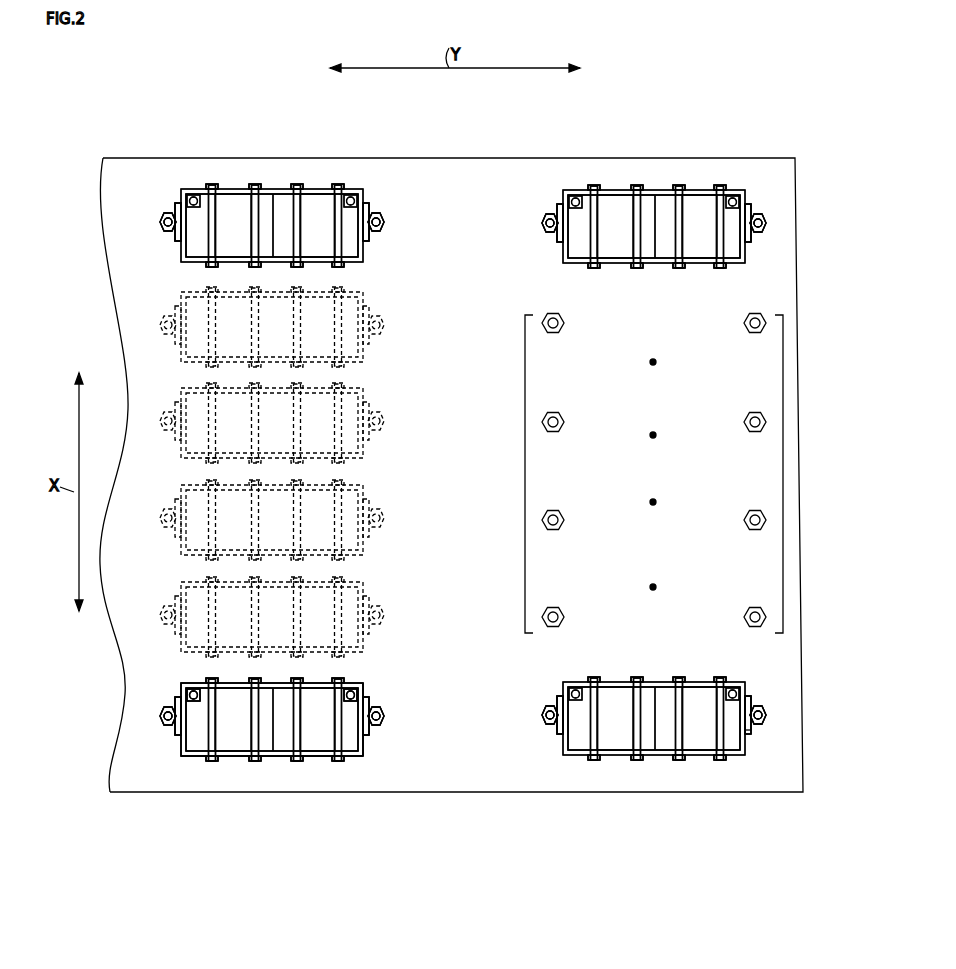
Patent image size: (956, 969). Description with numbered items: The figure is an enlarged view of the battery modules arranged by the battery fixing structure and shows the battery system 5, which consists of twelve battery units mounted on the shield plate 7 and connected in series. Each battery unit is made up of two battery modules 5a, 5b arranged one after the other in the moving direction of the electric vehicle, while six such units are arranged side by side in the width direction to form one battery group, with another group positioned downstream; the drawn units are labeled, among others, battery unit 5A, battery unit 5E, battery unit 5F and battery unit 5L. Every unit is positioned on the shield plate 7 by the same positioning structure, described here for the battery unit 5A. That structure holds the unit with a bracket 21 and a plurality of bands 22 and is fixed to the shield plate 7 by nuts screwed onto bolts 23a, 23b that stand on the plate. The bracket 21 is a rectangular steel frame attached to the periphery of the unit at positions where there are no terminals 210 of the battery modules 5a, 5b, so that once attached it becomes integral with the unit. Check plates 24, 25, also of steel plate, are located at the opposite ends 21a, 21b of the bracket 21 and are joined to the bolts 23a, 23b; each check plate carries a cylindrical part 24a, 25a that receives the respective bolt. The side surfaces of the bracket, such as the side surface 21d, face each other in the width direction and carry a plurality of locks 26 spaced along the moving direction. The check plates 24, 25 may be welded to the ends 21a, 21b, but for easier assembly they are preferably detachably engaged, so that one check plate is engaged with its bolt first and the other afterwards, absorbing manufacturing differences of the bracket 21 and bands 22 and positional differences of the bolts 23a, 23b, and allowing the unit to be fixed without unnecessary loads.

The battery system 5 is at (483, 820).
The battery unit 5A is at (297, 811).
The battery unit 5E is at (308, 134).
The battery unit 5F is at (688, 134).
The battery unit 5L is at (676, 811).
The battery module 5a is at (238, 200).
The battery module 5b is at (320, 200).
The shield plate 7 is at (448, 188).
The bracket 21 is at (192, 190).
The end of the bracket 21a is at (273, 681).
The end of the bracket 21b is at (365, 746).
The side surface of the bracket 21d is at (224, 758).
The terminals 210 is at (186, 688).
The bands 22 is at (341, 190).
The bolt 23a is at (522, 462).
The bolt 23b is at (786, 462).
The check plate 24 is at (177, 210).
The cylindrical part 24a is at (160, 223).
The check plate 25 is at (370, 243).
The cylindrical part 25a is at (385, 222).
The locks 26 is at (213, 184).